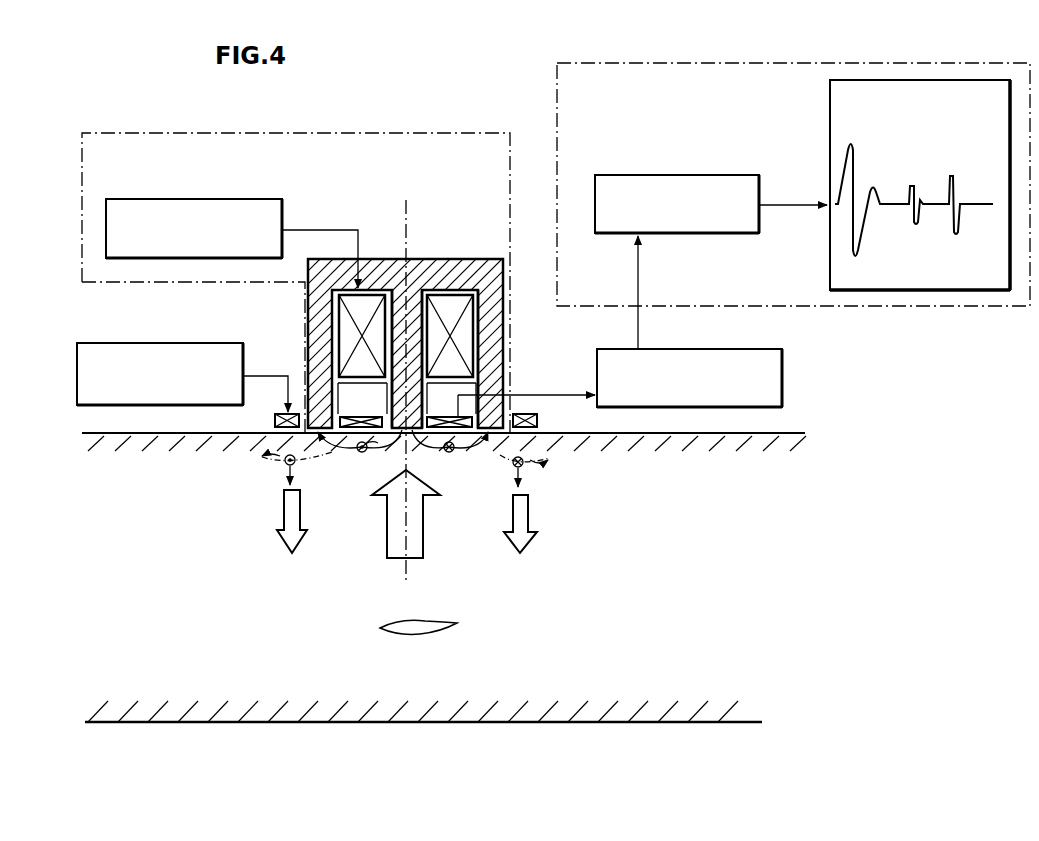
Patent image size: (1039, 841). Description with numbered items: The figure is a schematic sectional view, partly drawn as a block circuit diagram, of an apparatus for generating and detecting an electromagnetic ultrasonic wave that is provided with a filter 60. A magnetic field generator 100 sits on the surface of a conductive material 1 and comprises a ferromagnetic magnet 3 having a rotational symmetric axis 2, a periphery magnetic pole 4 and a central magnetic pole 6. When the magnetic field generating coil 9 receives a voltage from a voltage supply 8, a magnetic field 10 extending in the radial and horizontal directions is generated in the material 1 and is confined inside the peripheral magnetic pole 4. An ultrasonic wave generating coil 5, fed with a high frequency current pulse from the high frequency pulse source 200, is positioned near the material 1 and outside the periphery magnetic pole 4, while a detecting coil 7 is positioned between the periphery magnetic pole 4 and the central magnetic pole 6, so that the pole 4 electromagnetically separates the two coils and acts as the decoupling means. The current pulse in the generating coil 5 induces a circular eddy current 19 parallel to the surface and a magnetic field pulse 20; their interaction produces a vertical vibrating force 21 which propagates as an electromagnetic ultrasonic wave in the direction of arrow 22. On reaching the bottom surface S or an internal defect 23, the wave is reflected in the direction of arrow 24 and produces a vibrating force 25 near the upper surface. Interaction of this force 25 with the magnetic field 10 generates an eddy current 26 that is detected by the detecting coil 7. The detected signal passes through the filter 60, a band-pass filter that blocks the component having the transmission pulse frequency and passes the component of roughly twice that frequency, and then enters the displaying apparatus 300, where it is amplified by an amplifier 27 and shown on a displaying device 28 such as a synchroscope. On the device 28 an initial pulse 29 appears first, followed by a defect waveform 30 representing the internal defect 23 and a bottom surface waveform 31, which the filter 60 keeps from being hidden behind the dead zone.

The conductive material 1 is at (752, 433).
The rotational symmetric axis 2 is at (408, 217).
The ferromagnetic magnet 3 is at (450, 260).
The periphery magnetic pole 4 is at (500, 326).
The ultrasonic wave generating coil 5 is at (276, 418).
The central magnetic pole 6 is at (411, 300).
The detecting coil 7 is at (362, 417).
The voltage supply 8 is at (283, 212).
The magnetic field generating coil 9 is at (372, 300).
The magnetic field 10 is at (345, 443).
The eddy current 19 is at (285, 465).
The magnetic field pulse 20 is at (264, 462).
The vibrating force 21 is at (288, 478).
The arrow 22 is at (284, 537).
The internal defect 23 is at (446, 620).
The arrow 24 is at (386, 540).
The vibrating force 25 is at (360, 455).
The eddy current 26 is at (367, 449).
The amplifier 27 is at (725, 175).
The displaying device 28 is at (896, 185).
The initial pulse 29 is at (858, 156).
The defect waveform 30 is at (914, 188).
The bottom surface waveform 31 is at (955, 178).
The filter 60 is at (718, 349).
The magnetic field generator 100 is at (345, 132).
The high frequency pulse source 200 is at (160, 343).
The displaying apparatus 300 is at (556, 95).
The bottom surface S is at (650, 723).